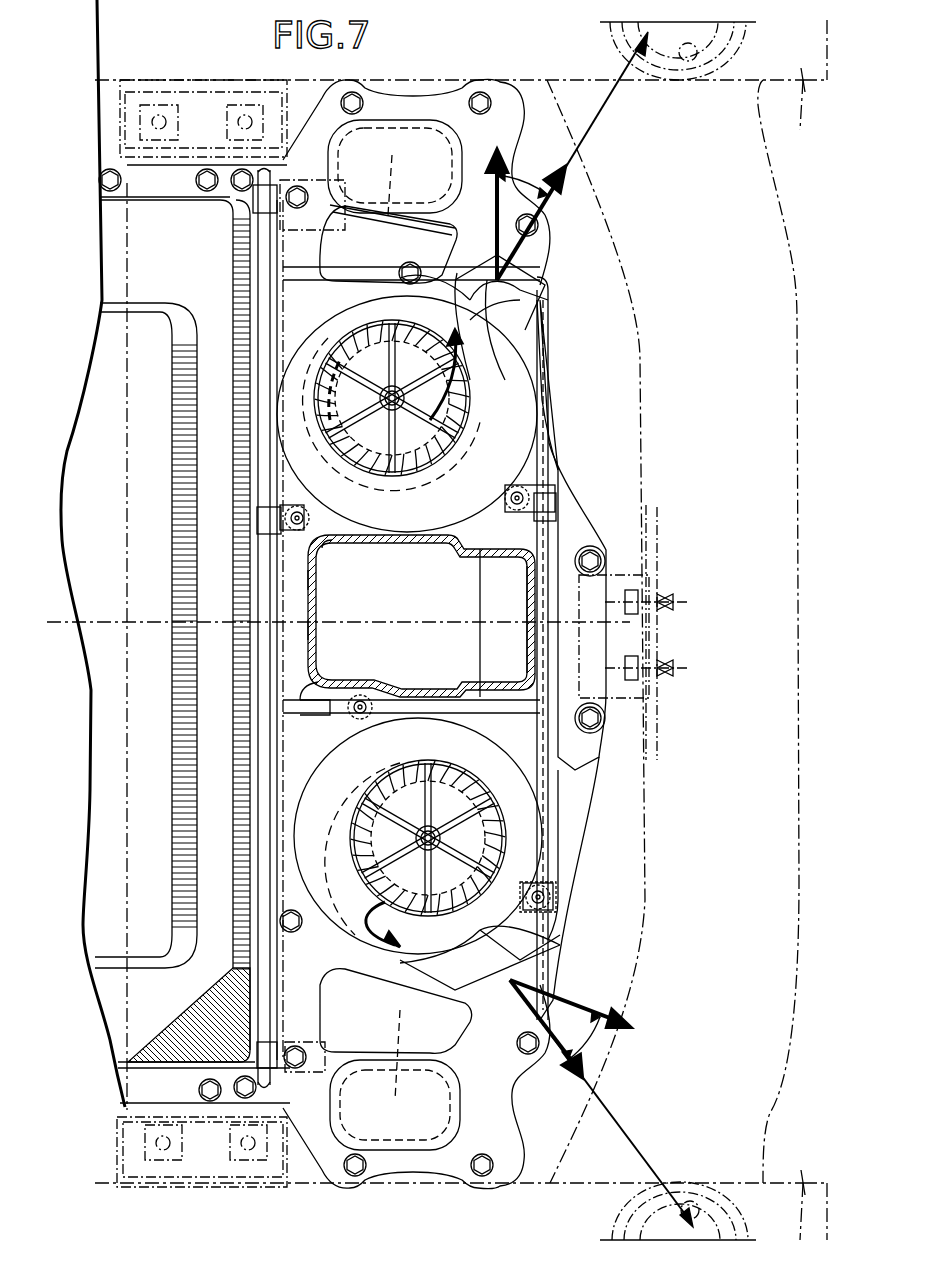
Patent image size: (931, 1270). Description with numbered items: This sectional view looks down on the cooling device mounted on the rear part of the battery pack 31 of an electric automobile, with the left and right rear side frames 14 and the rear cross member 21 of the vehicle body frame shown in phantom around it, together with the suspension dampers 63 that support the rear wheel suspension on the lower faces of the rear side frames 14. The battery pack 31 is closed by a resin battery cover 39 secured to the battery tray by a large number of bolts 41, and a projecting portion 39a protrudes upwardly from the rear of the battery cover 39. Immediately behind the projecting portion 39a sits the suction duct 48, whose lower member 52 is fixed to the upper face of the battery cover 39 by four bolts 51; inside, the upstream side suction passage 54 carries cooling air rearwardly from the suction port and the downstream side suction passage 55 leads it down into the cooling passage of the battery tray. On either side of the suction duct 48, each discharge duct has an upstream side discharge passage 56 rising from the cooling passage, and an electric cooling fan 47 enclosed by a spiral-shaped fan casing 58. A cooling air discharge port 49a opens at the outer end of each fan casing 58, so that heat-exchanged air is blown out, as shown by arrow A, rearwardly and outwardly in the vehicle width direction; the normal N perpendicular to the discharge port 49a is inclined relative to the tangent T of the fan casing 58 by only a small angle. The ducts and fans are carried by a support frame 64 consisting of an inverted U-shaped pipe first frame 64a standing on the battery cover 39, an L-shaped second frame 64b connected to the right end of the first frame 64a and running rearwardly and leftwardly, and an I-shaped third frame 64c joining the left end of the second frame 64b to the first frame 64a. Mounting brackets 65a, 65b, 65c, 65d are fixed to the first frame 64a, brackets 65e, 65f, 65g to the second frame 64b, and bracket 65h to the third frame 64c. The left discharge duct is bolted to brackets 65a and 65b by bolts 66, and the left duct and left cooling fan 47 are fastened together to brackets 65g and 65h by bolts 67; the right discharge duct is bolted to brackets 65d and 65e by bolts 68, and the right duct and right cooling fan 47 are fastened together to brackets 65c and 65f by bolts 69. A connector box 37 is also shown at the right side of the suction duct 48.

The rear side frame 14 is at (809, 630).
The rear cross member 21 is at (800, 735).
The battery pack 31 is at (190, 150).
The connector box 37 is at (650, 705).
The battery cover 39 is at (85, 702).
The projecting portion 39a is at (80, 446).
The bolts 41 is at (482, 100).
The cooling fan 47 is at (348, 438).
The suction duct 48 is at (302, 633).
The cooling air discharge port 49a is at (530, 300).
The bolts 51 is at (327, 542).
The lower member 52 is at (302, 578).
The upstream side suction passage 54 is at (421, 616).
The downstream side suction passage 55 is at (508, 619).
The upstream side discharge passage 56 is at (396, 635).
The fan casing 58 is at (550, 355).
The suspension damper 63 is at (690, 95).
The support frame 64 is at (255, 795).
The first frame 64a is at (265, 855).
The second frame 64b is at (560, 445).
The third frame 64c is at (565, 755).
The mounting bracket 65a is at (266, 1040).
The mounting bracket 65b is at (235, 925).
The mounting bracket 65c is at (268, 505).
The mounting bracket 65d is at (265, 212).
The mounting bracket 65e is at (450, 270).
The mounting bracket 65f is at (556, 505).
The mounting bracket 65g is at (550, 885).
The mounting bracket 65h is at (345, 715).
The bolts 66 is at (293, 932).
The bolts 67 is at (360, 718).
The bolts 68 is at (297, 208).
The bolts 69 is at (310, 512).
The tangent T is at (497, 200).
The normal N is at (530, 245).
The arrow A is at (605, 110).